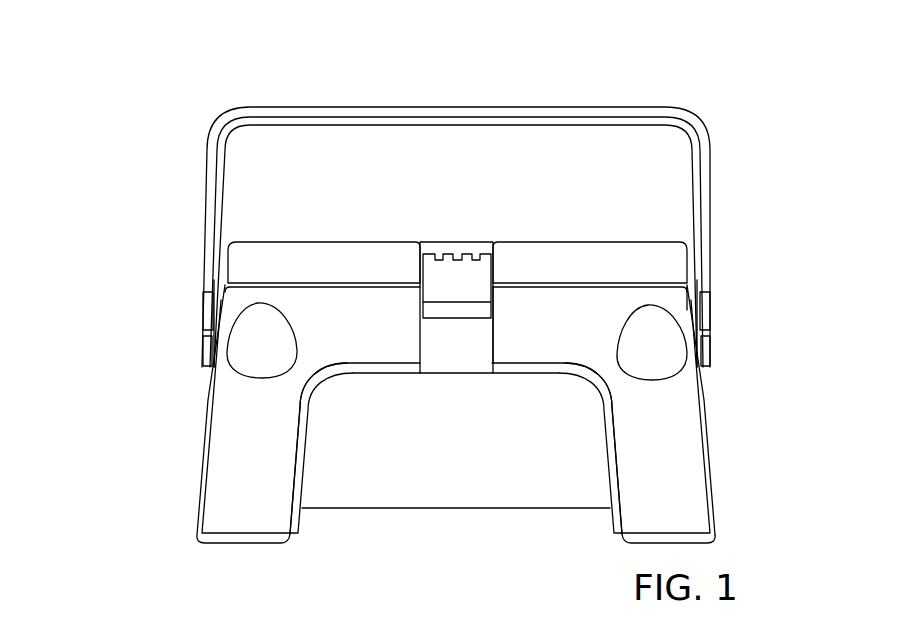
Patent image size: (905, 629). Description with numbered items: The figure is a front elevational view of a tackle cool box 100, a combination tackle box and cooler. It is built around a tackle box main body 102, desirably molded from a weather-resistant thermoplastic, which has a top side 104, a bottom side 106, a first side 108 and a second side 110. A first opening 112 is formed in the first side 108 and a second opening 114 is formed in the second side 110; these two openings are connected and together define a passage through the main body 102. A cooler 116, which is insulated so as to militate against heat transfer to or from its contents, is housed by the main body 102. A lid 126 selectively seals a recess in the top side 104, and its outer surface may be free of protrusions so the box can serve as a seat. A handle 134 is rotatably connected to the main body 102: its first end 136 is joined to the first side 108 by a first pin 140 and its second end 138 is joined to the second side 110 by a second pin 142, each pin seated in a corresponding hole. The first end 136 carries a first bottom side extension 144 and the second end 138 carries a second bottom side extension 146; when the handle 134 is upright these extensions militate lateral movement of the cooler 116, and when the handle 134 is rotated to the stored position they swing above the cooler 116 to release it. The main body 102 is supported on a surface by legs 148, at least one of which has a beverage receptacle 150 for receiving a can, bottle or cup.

The tackle cool box 100 is at (737, 122).
The tackle box main body 102 is at (610, 310).
The top side 104 is at (349, 238).
The bottom side 106 is at (528, 438).
The first side 108 is at (194, 417).
The second side 110 is at (722, 440).
The first opening 112 is at (237, 414).
The second opening 114 is at (674, 414).
The cooler 116 is at (373, 509).
The lid 126 is at (538, 243).
The handle 134 is at (457, 106).
The first end 136 is at (210, 295).
The second end 138 is at (710, 293).
The first pin 140 is at (218, 277).
The second pin 142 is at (697, 300).
The first bottom side extension 144 is at (203, 357).
The second bottom side extension 146 is at (710, 357).
The legs 148 is at (697, 503).
The beverage receptacle 150 is at (652, 378).